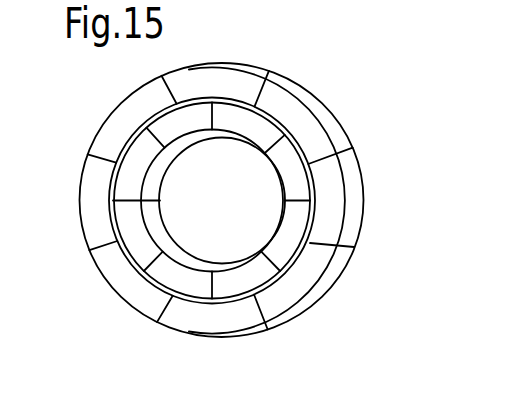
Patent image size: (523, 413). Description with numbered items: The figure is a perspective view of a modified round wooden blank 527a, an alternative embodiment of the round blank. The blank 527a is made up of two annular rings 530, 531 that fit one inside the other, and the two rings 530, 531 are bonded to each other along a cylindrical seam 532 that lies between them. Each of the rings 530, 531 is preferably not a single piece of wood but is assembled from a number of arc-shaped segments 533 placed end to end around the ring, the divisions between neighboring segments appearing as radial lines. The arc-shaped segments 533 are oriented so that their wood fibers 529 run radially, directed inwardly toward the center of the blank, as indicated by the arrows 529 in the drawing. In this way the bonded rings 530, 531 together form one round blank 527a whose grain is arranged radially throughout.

The blank 527a is at (343, 104).
The radially oriented fibers 529 is at (213, 88).
The annular ring 530 is at (297, 173).
The annular ring 531 is at (310, 273).
The cylindrical seam 532 is at (338, 252).
The arc-shaped segments 533 is at (242, 85).